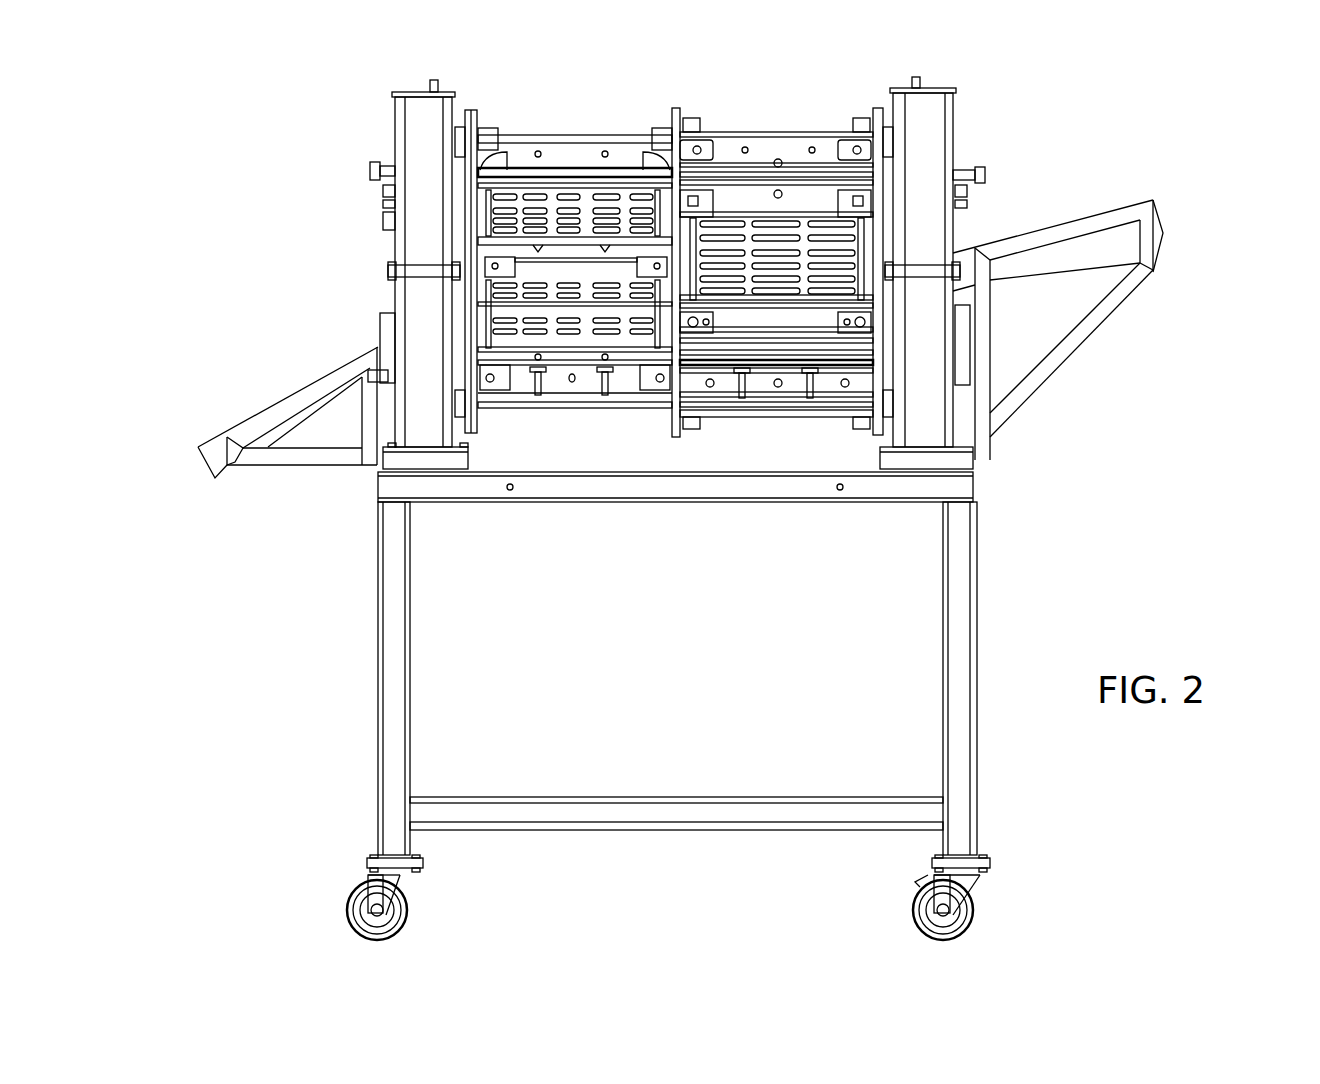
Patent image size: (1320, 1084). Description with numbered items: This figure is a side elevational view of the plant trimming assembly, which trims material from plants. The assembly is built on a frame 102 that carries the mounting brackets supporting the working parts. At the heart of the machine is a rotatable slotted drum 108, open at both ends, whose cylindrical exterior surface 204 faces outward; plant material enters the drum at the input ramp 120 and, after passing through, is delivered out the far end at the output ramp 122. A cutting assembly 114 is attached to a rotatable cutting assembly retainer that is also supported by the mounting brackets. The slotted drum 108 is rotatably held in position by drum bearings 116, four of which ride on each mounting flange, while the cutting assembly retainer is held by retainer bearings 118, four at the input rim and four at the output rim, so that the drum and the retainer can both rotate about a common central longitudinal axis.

The frame 102 is at (937, 483).
The rotatable slotted drum 108 is at (542, 213).
The cutting assembly 114 is at (917, 246).
The drum bearings 116 is at (387, 220).
The retainer bearings 118 is at (483, 420).
The input ramp 120 is at (1120, 203).
The output ramp 122 is at (300, 387).
The cylindrical exterior surface 204 is at (857, 287).